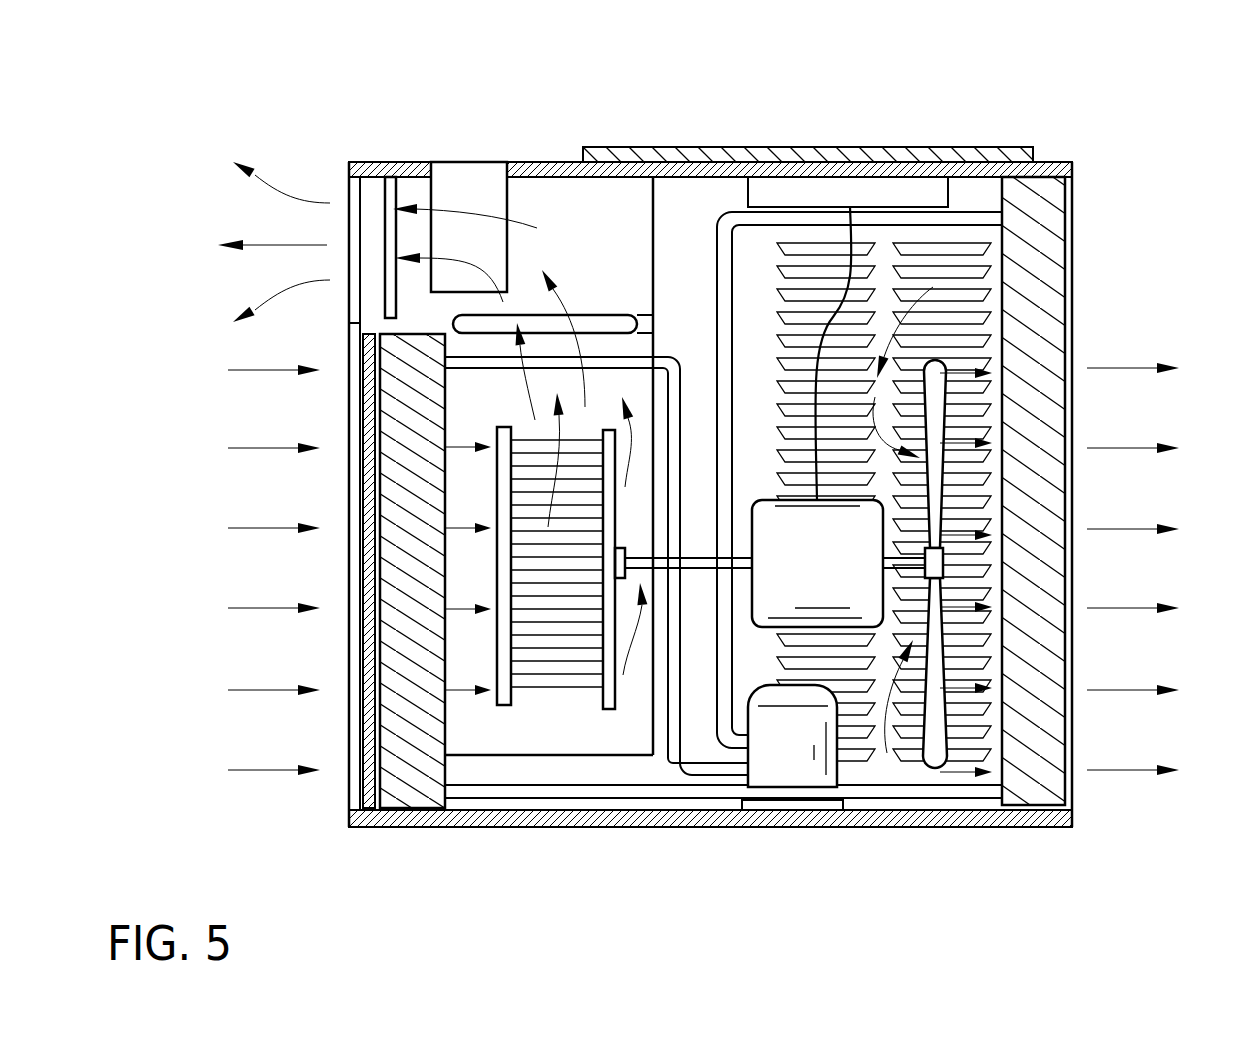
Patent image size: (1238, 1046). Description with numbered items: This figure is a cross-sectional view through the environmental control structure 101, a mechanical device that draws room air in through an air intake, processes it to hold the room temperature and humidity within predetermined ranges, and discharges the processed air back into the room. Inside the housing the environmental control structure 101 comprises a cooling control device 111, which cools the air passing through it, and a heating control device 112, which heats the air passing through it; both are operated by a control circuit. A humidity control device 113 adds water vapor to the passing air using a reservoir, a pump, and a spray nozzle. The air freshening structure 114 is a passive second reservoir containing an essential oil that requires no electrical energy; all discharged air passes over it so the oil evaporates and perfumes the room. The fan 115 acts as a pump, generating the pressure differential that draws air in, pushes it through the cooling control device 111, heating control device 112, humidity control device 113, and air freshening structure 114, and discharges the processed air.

The environmental control structure 101 is at (192, 119).
The cooling control device 111 is at (787, 745).
The heating control device 112 is at (596, 325).
The humidity control device 113 is at (893, 195).
The air freshening structure 114 is at (1048, 312).
The fan 115 is at (860, 580).